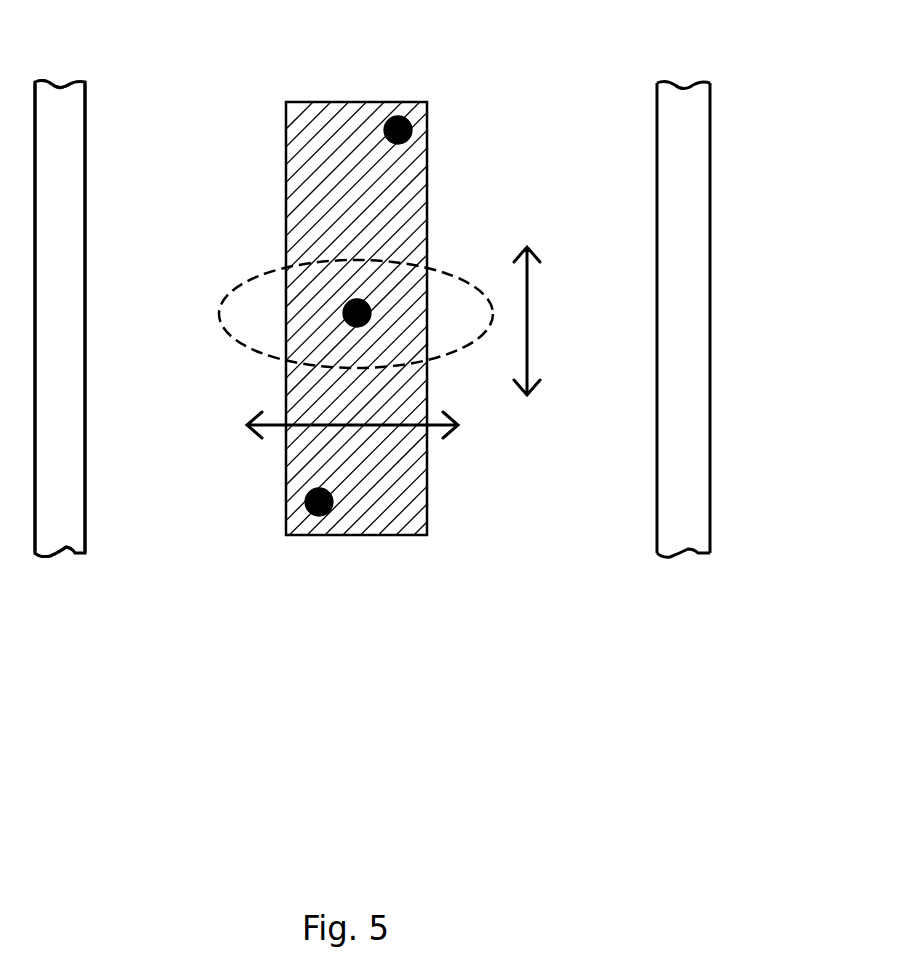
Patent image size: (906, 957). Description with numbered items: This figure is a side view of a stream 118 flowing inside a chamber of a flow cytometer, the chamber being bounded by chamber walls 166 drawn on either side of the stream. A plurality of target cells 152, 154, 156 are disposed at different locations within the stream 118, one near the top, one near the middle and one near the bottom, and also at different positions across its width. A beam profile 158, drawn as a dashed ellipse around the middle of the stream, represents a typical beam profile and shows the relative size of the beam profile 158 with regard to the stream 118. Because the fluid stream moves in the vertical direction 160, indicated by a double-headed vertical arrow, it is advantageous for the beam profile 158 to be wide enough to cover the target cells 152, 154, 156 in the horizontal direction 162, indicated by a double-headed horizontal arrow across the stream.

The stream 118 is at (428, 146).
The target cell 152 is at (399, 116).
The target cell 154 is at (356, 299).
The target cell 156 is at (312, 508).
The beam profile 158 is at (452, 272).
The vertical direction 160 is at (542, 263).
The horizontal direction 162 is at (468, 425).
The chamber wall 166 is at (712, 118).